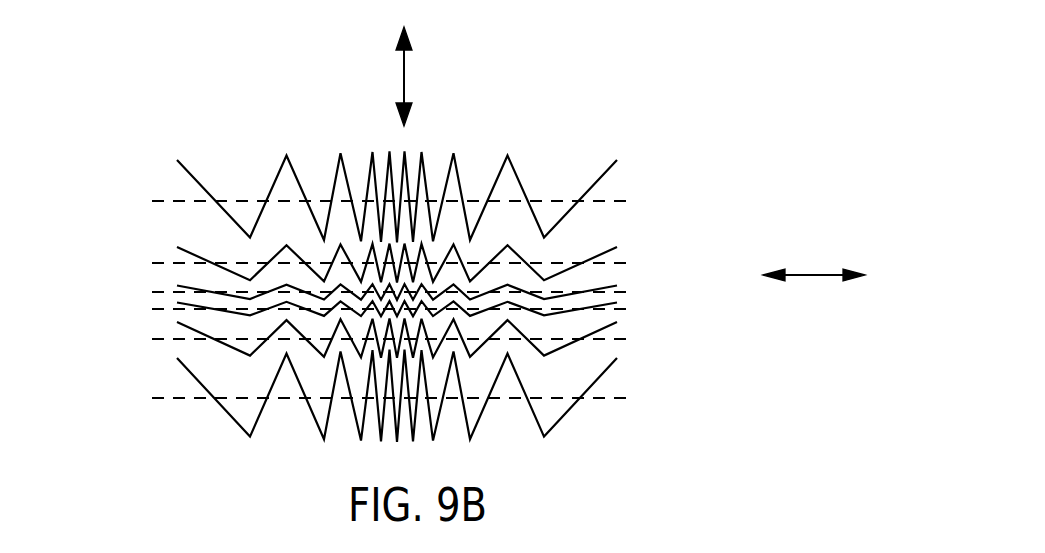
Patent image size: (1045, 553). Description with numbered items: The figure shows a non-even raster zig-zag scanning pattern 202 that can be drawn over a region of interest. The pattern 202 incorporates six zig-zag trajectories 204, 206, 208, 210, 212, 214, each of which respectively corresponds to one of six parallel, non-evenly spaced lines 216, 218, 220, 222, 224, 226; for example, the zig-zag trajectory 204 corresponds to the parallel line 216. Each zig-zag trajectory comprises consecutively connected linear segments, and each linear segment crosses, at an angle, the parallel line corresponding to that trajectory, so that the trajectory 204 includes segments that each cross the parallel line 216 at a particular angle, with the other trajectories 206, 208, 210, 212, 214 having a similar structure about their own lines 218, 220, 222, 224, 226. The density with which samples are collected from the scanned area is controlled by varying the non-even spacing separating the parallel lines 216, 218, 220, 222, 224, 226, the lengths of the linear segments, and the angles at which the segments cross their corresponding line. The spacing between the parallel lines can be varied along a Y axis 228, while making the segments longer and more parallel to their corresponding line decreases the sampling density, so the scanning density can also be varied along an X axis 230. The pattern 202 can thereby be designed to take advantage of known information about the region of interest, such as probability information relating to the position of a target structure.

The non-even raster zig-zag scanning pattern 202 is at (622, 74).
The zig-zag trajectory 204 is at (623, 158).
The zig-zag trajectory 206 is at (620, 242).
The zig-zag trajectory 208 is at (623, 278).
The zig-zag trajectory 210 is at (623, 303).
The zig-zag trajectory 212 is at (622, 318).
The zig-zag trajectory 214 is at (622, 358).
The parallel line 216 is at (140, 201).
The parallel line 218 is at (145, 263).
The parallel line 220 is at (145, 292).
The parallel line 222 is at (145, 309).
The parallel line 224 is at (145, 339).
The parallel line 226 is at (145, 398).
The Y axis 228 is at (405, 72).
The X axis 230 is at (820, 273).